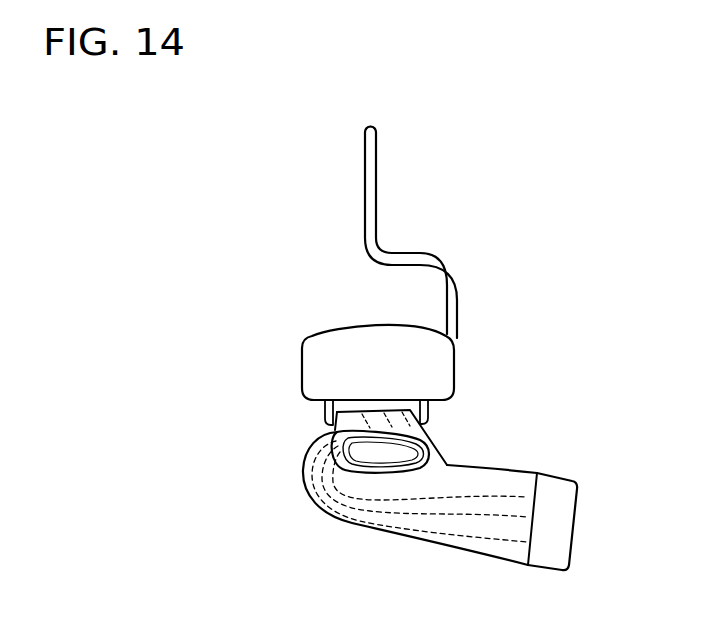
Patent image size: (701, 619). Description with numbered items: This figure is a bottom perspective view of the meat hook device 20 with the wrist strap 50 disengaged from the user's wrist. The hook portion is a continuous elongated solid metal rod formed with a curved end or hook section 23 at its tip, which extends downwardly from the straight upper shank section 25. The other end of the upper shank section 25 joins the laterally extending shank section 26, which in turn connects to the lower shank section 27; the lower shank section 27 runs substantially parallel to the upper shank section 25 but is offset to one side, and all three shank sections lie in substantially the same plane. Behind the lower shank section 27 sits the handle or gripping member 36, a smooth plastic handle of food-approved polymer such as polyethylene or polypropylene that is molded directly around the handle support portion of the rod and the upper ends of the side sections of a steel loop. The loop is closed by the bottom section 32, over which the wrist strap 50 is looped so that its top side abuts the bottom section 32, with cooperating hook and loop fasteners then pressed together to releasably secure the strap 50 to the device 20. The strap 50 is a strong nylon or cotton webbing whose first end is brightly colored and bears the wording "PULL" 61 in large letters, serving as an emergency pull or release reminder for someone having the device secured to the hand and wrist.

The meat hook device 20 is at (532, 286).
The curved end or hook section 23 is at (371, 126).
The upper shank section 25 is at (368, 180).
The laterally extending shank section 26 is at (405, 259).
The lower shank section 27 is at (450, 297).
The bottom section 32 is at (428, 407).
The handle or gripping member 36 is at (323, 340).
The wrist strap 50 is at (459, 537).
The wording "PULL" 61 is at (558, 490).